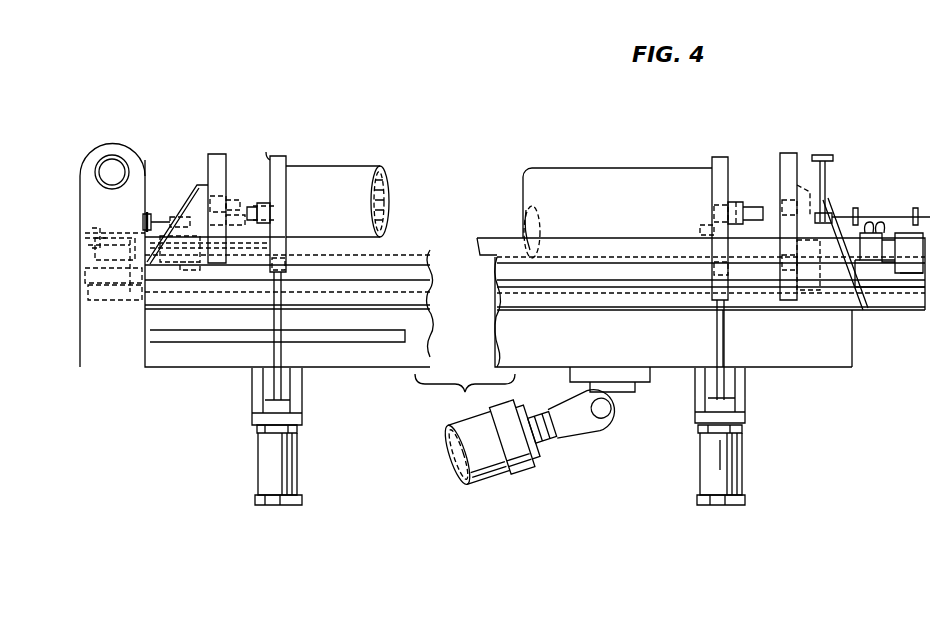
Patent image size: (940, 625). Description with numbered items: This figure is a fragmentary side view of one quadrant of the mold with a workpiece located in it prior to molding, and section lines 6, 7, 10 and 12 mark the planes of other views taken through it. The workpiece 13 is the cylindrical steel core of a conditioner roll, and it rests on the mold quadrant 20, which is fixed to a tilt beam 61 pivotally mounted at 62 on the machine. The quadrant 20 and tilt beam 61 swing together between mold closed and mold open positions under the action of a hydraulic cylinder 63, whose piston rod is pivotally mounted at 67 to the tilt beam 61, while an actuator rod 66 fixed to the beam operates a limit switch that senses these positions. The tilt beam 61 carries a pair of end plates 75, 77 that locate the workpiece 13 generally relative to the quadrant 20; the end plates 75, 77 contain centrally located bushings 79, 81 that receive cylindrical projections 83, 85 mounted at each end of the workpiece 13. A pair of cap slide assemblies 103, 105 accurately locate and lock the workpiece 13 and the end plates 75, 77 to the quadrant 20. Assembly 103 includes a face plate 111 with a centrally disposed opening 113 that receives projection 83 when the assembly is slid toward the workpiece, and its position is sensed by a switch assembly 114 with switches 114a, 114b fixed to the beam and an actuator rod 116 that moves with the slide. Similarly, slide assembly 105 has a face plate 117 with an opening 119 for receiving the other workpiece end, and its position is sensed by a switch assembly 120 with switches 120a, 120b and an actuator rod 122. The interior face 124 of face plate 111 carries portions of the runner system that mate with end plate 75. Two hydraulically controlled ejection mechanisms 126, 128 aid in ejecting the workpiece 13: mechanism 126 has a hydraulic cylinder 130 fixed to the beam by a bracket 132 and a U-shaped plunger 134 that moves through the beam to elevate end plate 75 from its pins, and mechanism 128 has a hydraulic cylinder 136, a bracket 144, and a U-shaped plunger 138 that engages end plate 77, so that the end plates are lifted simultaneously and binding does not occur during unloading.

The section line 6- 6 is at (58, 425).
The section line 7- 7 is at (261, 330).
The section line 10- 10 is at (238, 330).
The section line 12- 12 is at (730, 127).
The workpiece 13 is at (558, 175).
The mold quadrant 20 is at (500, 248).
The tilt beam 61 is at (815, 348).
The pivot 62 is at (118, 160).
The hydraulic cylinder 63 is at (515, 490).
The actuator rod 66 is at (822, 155).
The pivot 67 is at (612, 418).
The end plate 75 is at (284, 165).
The end plate 77 is at (718, 167).
The bushing 79 is at (270, 212).
The bushing 81 is at (716, 232).
The cylindrical projection 83 is at (266, 226).
The cylindrical projection 85 is at (740, 205).
The cap slide assembly 103 is at (193, 195).
The cap slide assembly 105 is at (833, 204).
The face plate 111 is at (217, 160).
The opening 113 is at (228, 205).
The switch assembly 114 is at (128, 233).
The switch 114a is at (128, 237).
The switch 114b is at (152, 212).
The actuator rod 116 is at (105, 240).
The face plate 117 is at (785, 167).
The opening 119 is at (790, 215).
The switch assembly 120 is at (905, 200).
The switch 120a is at (873, 232).
The switch 120b is at (860, 236).
The actuator rod 122 is at (876, 216).
The interior face 124 is at (236, 180).
The ejection mechanism 126 is at (272, 152).
The ejection mechanism 128 is at (752, 388).
The hydraulic cylinder 130 is at (300, 447).
The bracket 132 is at (302, 395).
The U-shaped plunger 134 is at (285, 353).
The hydraulic cylinder 136 is at (744, 447).
The U-shaped plunger 138 is at (726, 338).
The bracket 144 is at (696, 397).